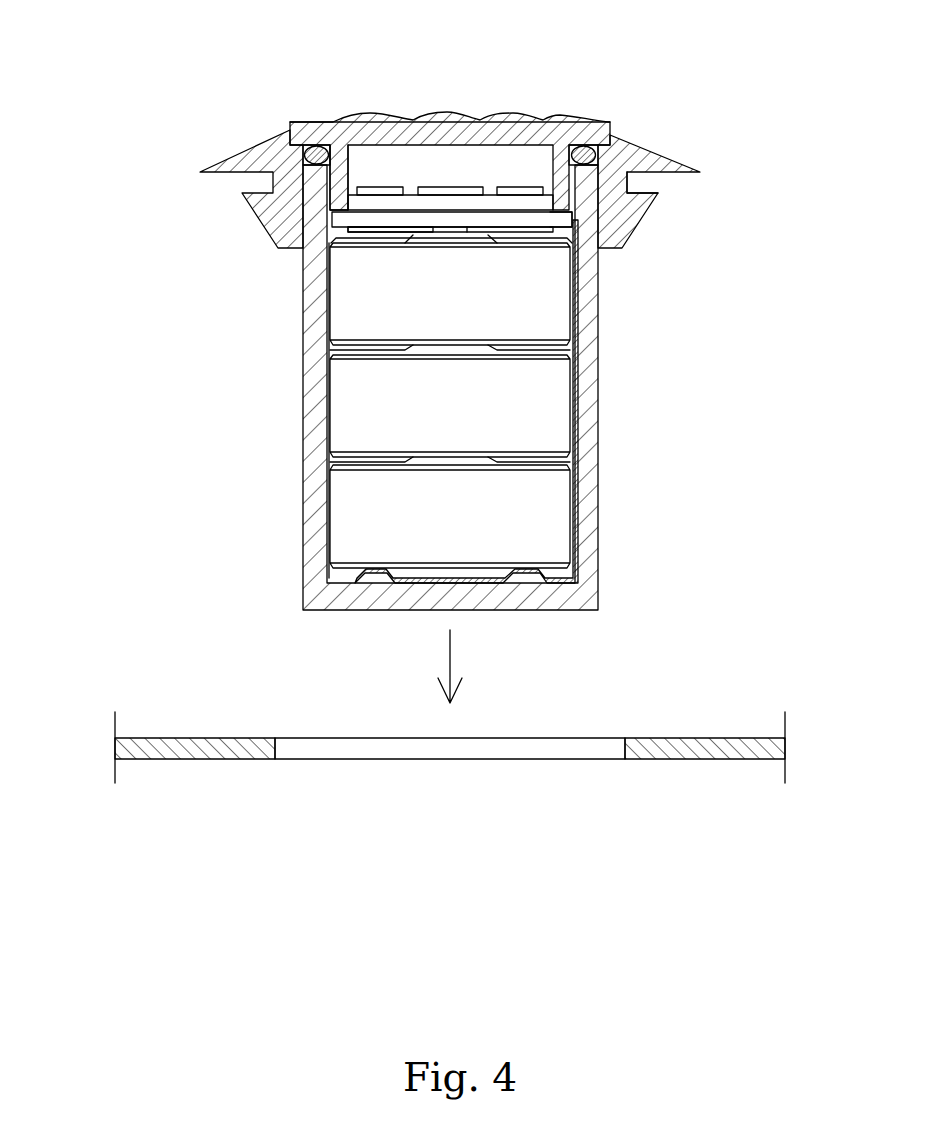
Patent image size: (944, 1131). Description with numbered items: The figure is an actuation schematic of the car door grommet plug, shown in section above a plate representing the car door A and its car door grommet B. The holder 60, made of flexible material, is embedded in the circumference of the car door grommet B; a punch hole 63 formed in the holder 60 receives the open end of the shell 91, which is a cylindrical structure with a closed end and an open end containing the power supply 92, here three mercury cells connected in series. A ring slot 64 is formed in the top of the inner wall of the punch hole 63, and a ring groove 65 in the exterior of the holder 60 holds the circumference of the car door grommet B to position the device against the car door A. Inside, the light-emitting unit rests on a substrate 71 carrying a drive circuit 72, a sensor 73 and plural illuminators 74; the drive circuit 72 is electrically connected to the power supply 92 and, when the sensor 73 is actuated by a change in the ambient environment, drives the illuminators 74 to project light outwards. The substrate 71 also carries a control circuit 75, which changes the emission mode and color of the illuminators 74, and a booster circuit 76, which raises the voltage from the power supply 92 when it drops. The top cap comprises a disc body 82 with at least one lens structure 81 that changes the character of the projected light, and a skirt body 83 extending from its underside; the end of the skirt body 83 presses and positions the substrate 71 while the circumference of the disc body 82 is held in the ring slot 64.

The holder 60 is at (232, 143).
The ring slot 64 is at (612, 134).
The ring groove 65 is at (637, 182).
The lens structure 81 is at (537, 117).
The disc body 82 is at (313, 138).
The skirt body 83 is at (330, 190).
The punch hole 63 is at (547, 222).
The substrate 71 is at (570, 221).
The drive circuit 72 is at (377, 203).
The sensor 73 is at (427, 191).
The illuminators 74 is at (502, 190).
The control circuit 75 is at (527, 233).
The booster circuit 76 is at (373, 232).
The shell 91 is at (586, 506).
The power supply 92 is at (485, 312).
The car door A is at (215, 752).
The car door grommet B is at (567, 750).